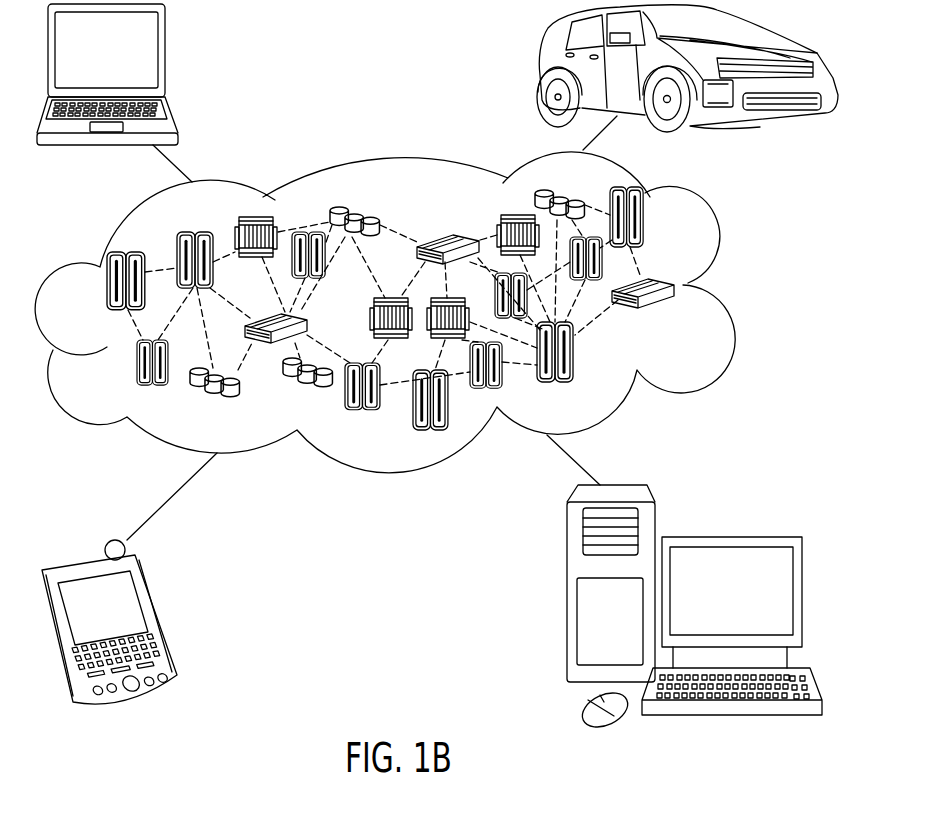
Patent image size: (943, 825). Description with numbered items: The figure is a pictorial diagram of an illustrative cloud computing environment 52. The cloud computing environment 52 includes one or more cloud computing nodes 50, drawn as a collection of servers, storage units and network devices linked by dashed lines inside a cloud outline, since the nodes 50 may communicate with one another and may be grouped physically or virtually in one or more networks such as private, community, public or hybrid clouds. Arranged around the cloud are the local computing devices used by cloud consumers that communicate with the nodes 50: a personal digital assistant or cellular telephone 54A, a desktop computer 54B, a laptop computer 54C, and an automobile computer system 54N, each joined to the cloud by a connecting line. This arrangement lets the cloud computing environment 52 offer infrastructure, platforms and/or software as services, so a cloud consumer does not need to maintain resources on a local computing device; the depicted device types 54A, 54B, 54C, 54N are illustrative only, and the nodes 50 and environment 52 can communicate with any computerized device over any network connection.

The cloud computing nodes 50 is at (727, 212).
The cloud computing environment 52 is at (729, 288).
The personal digital assistant or cellular telephone 54A is at (157, 618).
The desktop computer 54B is at (730, 537).
The laptop computer 54C is at (166, 57).
The automobile computer system 54N is at (538, 70).